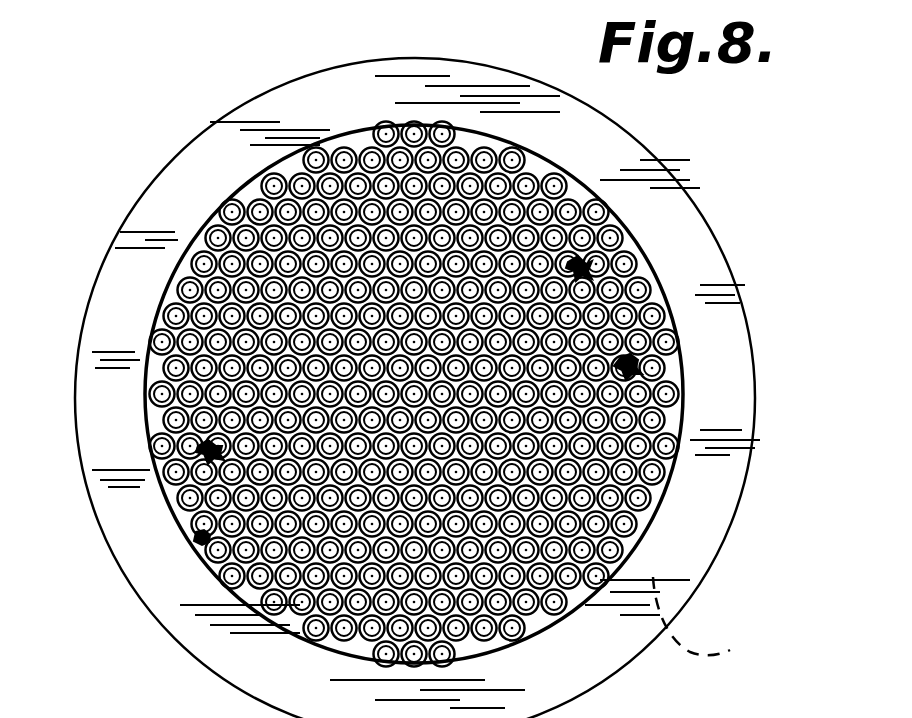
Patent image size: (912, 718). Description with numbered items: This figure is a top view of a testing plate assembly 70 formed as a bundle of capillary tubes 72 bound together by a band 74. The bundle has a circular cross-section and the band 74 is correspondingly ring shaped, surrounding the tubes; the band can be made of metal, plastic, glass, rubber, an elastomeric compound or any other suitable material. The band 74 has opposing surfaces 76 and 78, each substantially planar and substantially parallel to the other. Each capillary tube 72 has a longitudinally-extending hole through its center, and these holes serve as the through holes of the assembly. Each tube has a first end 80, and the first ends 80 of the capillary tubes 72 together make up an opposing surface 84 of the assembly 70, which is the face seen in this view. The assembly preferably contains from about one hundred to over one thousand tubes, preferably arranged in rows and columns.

The testing plate assembly 70 is at (578, 266).
The capillary tube 72 is at (630, 362).
The band 74 is at (722, 506).
The opposing surface of band 76 is at (727, 398).
The opposing surface of band 78 is at (712, 624).
The first end of capillary tube 80 is at (277, 177).
The opposing surface of assembly 84 is at (206, 452).